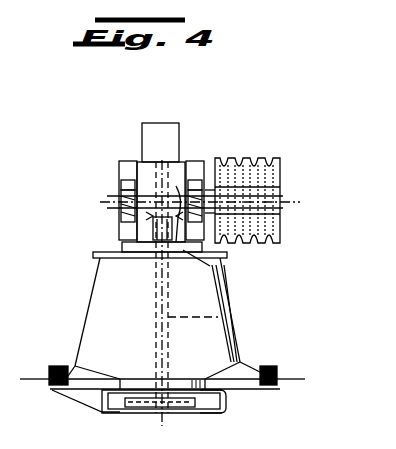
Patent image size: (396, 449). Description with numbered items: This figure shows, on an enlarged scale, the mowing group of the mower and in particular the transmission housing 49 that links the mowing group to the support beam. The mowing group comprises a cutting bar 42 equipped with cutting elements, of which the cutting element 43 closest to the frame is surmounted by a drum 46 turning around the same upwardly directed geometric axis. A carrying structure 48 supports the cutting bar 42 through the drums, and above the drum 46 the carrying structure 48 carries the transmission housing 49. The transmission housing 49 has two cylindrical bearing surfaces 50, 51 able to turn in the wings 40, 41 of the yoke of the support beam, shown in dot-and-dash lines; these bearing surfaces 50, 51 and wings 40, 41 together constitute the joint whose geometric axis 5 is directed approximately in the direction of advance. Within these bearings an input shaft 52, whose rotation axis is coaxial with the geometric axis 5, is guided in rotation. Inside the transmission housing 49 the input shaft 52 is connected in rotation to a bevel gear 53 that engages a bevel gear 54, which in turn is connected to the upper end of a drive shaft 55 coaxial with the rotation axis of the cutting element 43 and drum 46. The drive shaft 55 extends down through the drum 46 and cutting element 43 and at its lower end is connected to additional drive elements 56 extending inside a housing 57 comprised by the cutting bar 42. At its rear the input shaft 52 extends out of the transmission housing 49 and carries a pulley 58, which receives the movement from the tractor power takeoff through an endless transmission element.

The geometric axis 5 is at (116, 199).
The wing 40 is at (125, 166).
The wing 41 is at (197, 160).
The cutting bar 42 is at (80, 403).
The cutting element 43 is at (74, 365).
The drum 46 is at (100, 265).
The carrying structure 48 is at (155, 232).
The transmission housing 49 is at (138, 163).
The cylindrical bearing surface 50 is at (121, 184).
The cylindrical bearing surface 51 is at (203, 180).
The input shaft 52 is at (268, 203).
The bevel gear 53 is at (171, 166).
The bevel gear 54 is at (222, 269).
The drive shaft 55 is at (222, 313).
The additional drive elements 56 is at (146, 413).
The housing 57 is at (222, 412).
The pulley 58 is at (277, 164).